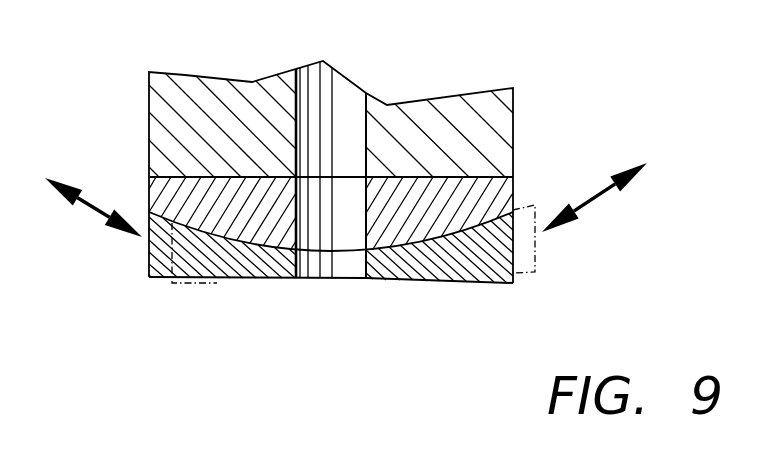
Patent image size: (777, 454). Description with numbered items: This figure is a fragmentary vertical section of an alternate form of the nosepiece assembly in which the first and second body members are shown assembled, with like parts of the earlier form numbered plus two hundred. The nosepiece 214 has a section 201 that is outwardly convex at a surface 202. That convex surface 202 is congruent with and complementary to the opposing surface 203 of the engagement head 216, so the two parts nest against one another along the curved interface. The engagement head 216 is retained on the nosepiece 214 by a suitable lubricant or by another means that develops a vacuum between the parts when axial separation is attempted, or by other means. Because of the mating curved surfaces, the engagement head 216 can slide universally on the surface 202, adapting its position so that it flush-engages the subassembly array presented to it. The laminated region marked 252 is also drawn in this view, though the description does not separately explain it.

The section 201 is at (483, 197).
The surface 202 is at (406, 250).
The opposing surface 203 is at (239, 240).
The nosepiece 214 is at (492, 128).
The engagement head 216 is at (396, 282).
The laminated insert 252 is at (327, 84).